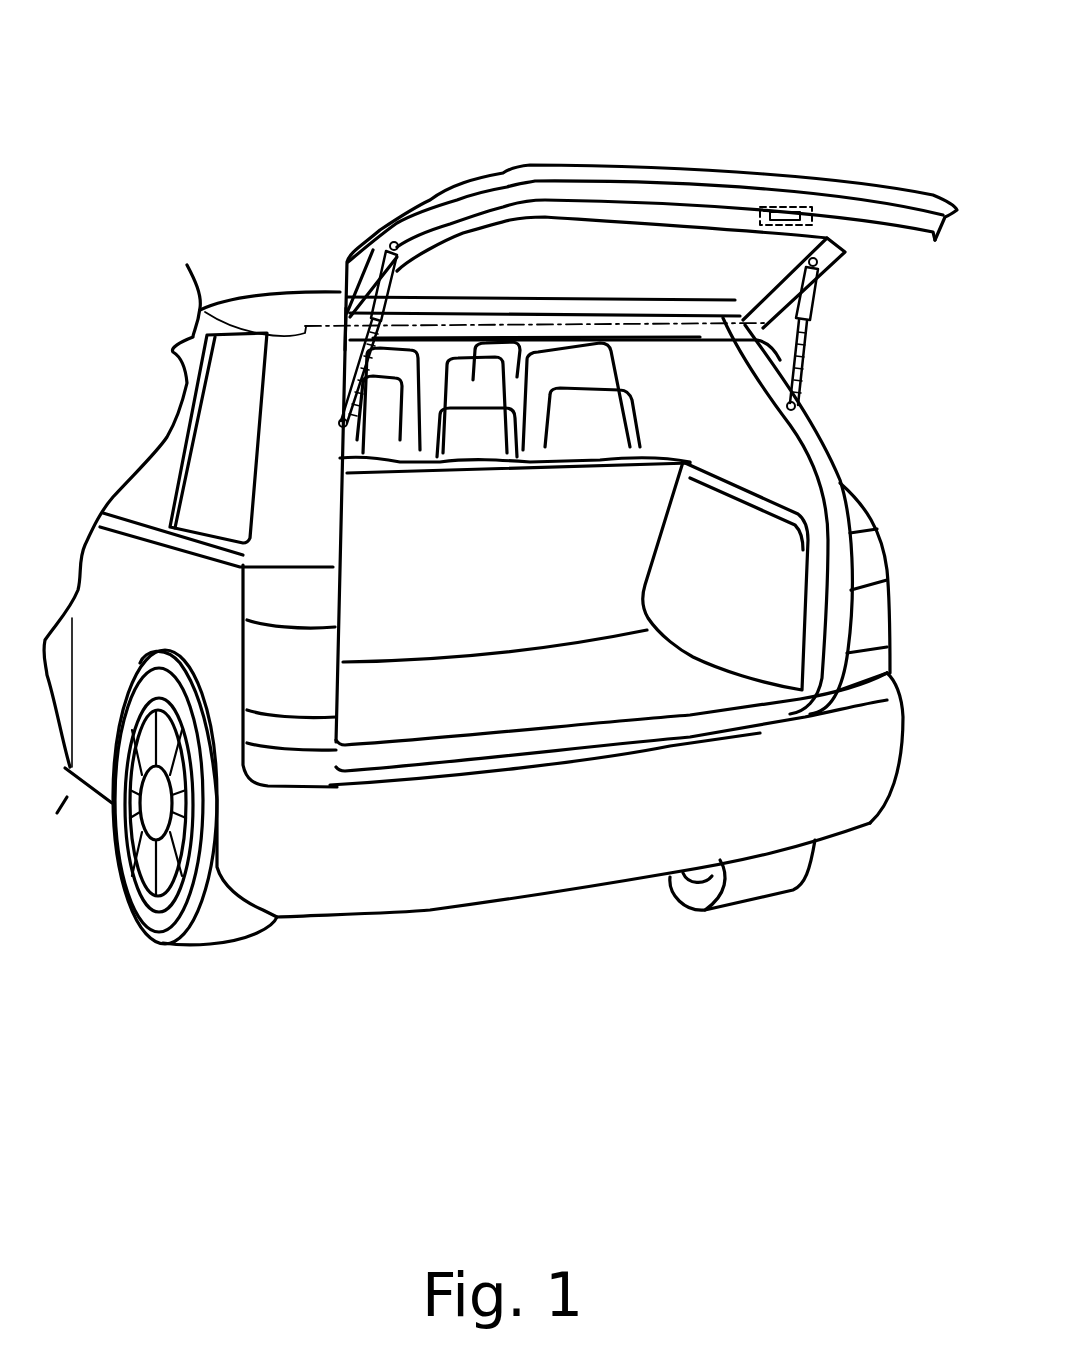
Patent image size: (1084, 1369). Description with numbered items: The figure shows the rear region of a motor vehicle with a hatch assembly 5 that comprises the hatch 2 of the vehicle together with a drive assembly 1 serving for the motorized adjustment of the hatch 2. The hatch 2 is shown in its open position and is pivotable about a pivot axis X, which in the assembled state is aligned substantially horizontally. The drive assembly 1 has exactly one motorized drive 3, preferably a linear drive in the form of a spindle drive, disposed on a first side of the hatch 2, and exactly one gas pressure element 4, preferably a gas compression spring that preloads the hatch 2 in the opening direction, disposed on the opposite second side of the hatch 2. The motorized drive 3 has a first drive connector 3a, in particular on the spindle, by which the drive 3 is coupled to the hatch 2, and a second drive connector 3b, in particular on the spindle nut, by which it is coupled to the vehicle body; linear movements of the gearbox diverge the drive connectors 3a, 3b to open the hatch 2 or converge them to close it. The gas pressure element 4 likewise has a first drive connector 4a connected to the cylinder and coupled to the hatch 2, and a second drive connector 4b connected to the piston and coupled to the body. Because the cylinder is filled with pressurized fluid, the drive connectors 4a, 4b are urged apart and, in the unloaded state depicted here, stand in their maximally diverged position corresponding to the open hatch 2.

The drive assembly 1 is at (407, 287).
The hatch 2 is at (871, 205).
The motorized drive 3 is at (239, 271).
The first drive connector 3a is at (391, 244).
The second drive connector 3b is at (340, 424).
The gas pressure element 4 is at (872, 361).
The first drive connector 4a is at (823, 275).
The second drive connector 4b is at (797, 408).
The hatch assembly 5 is at (884, 482).
The pivot axis X is at (210, 313).